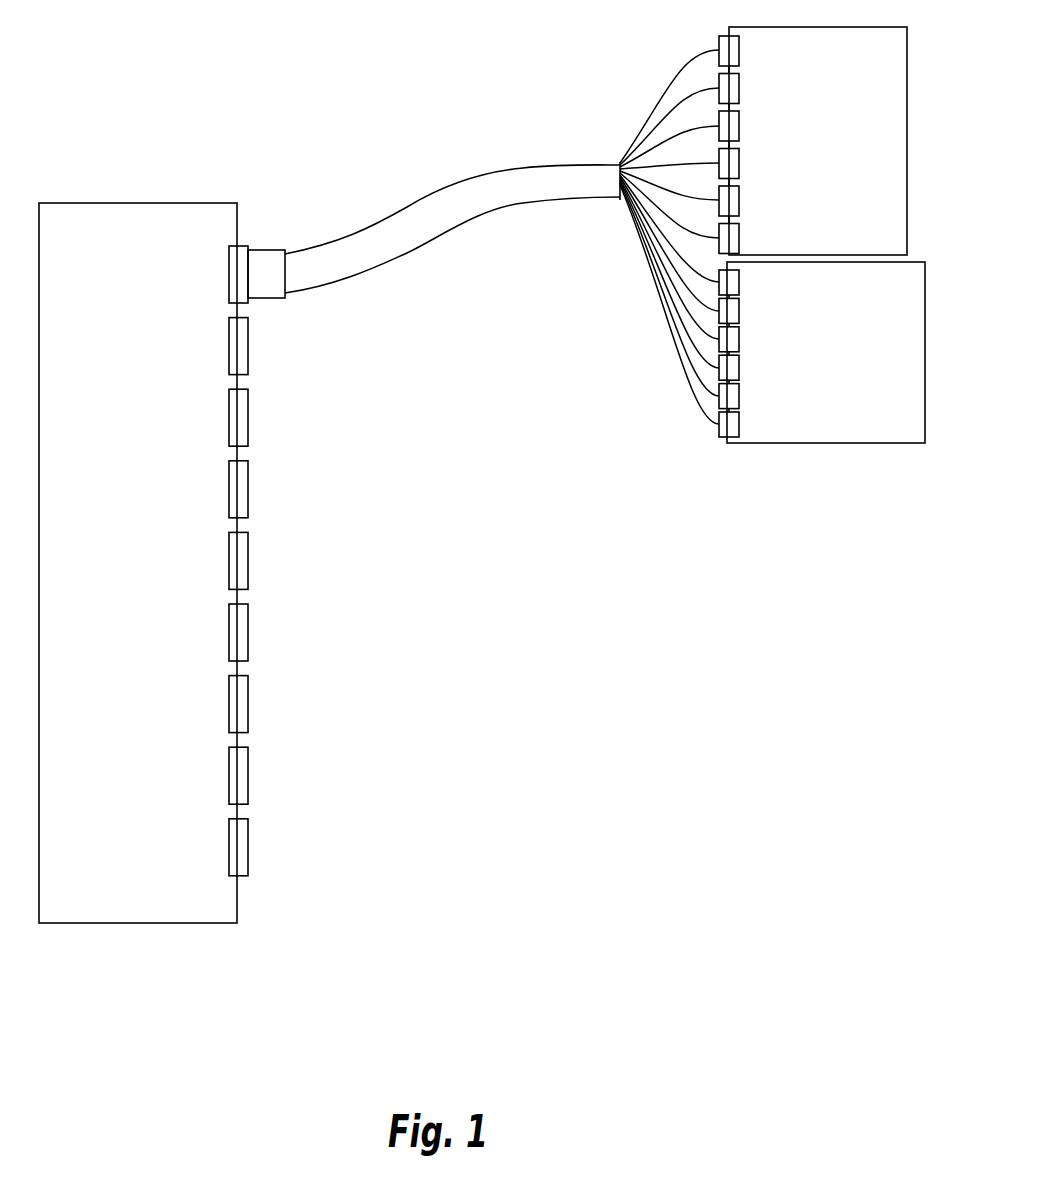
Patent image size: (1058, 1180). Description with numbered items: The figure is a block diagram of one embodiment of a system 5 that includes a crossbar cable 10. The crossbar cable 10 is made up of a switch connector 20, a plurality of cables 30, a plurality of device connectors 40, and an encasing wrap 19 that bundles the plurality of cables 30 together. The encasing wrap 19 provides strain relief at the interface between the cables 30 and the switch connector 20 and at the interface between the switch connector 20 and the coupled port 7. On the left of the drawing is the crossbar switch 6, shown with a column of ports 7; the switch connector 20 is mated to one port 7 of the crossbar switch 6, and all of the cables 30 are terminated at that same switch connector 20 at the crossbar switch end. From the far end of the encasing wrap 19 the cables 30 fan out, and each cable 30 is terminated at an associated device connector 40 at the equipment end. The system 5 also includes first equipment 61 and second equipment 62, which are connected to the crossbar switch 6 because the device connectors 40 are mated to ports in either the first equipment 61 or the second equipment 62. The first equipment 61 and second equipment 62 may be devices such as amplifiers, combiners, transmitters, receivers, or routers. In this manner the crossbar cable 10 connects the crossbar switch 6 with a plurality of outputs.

The system 5 is at (484, 960).
The crossbar switch 6 is at (131, 298).
The port 7 is at (229, 293).
The crossbar cable 10 is at (740, 505).
The encasing wrap 19 is at (372, 272).
The switch connector 20 is at (266, 300).
The cables 30 is at (693, 415).
The device connectors 40 is at (722, 452).
The first equipment 61 is at (816, 206).
The second equipment 62 is at (816, 419).